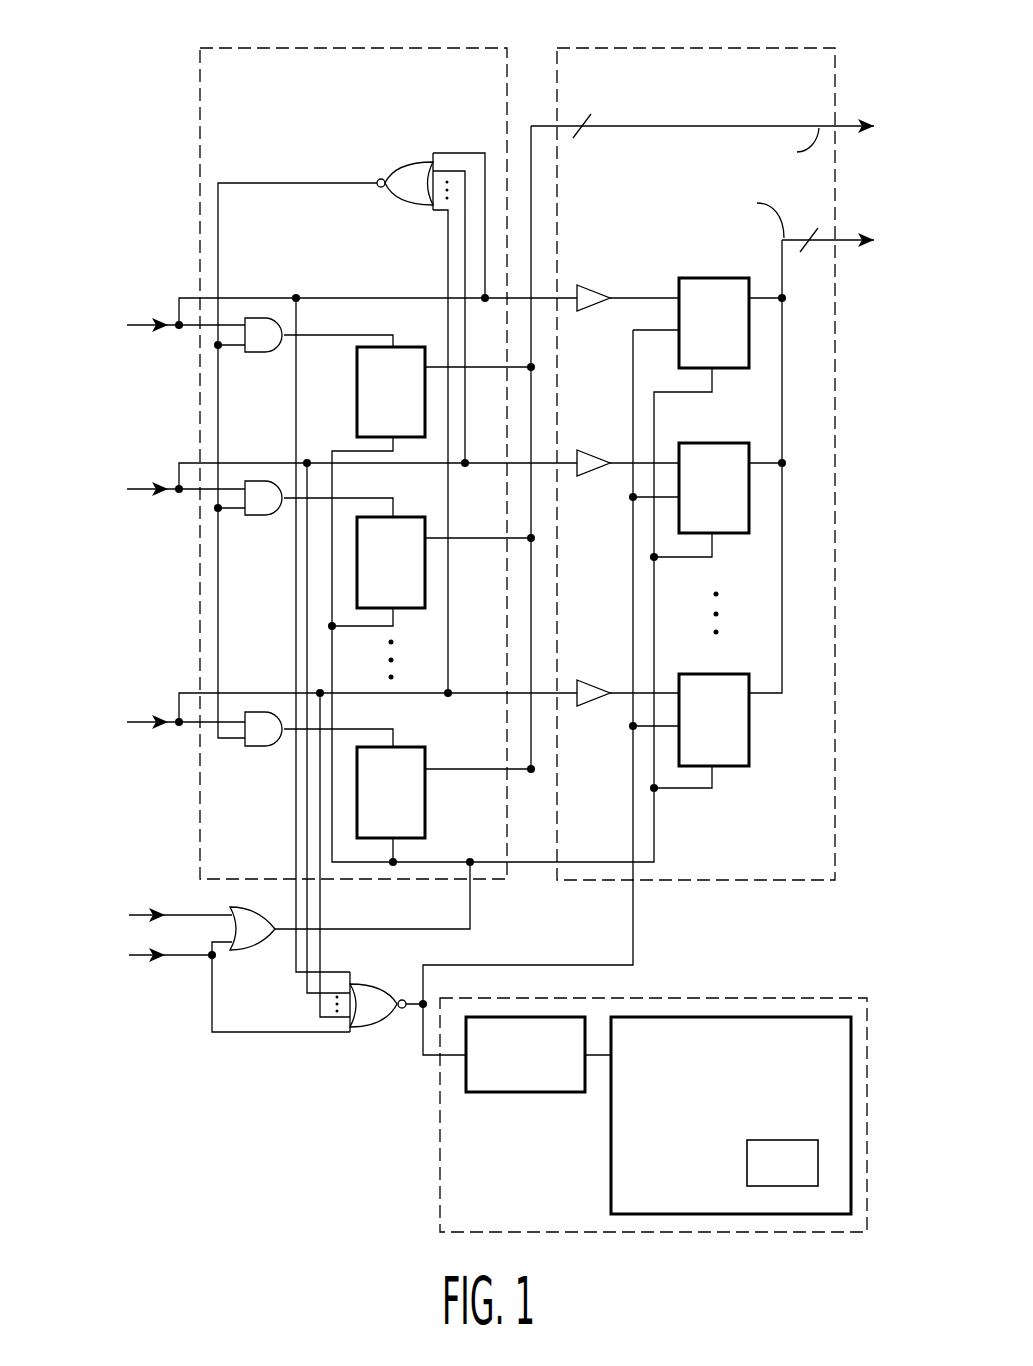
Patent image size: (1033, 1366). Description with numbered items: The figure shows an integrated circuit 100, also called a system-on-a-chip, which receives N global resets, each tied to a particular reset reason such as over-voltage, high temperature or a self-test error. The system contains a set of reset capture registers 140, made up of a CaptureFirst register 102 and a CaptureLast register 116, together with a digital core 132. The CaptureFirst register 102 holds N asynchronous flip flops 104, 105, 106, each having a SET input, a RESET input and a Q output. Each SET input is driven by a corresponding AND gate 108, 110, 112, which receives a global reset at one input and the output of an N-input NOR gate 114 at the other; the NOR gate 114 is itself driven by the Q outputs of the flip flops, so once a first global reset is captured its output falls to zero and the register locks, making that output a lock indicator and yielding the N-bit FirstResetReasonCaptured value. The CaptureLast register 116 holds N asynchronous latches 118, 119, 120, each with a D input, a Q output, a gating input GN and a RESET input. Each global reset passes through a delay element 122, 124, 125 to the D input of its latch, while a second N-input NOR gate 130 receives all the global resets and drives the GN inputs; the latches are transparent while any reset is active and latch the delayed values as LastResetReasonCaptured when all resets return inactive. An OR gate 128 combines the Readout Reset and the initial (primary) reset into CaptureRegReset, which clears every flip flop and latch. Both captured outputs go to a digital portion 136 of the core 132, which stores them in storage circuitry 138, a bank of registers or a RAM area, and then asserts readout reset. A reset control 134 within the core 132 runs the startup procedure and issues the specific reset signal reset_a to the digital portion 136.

The integrated circuit 100 is at (98, 27).
The CaptureFirst register 102 is at (236, 48).
The asynchronous flip flop 104 is at (357, 416).
The asynchronous flip flop 105 is at (416, 609).
The asynchronous flip flop 106 is at (425, 792).
The AND gate 108 is at (264, 352).
The AND gate 110 is at (264, 515).
The AND gate 112 is at (264, 747).
The N-input NOR gate 114 is at (418, 164).
The CaptureLast register 116 is at (800, 48).
The asynchronous latch 118 is at (711, 278).
The asynchronous latch 119 is at (711, 443).
The asynchronous latch 120 is at (749, 750).
The delay element 122 is at (586, 284).
The delay element 124 is at (586, 451).
The delay element 125 is at (593, 687).
The OR gate 128 is at (258, 944).
The N-input NOR gate 130 is at (382, 1025).
The digital core 132 is at (811, 998).
The reset control 134 is at (516, 1094).
The digital portion 136 is at (611, 1174).
The storage circuitry 138 is at (747, 1163).
The set of reset capture registers 140 is at (866, 477).